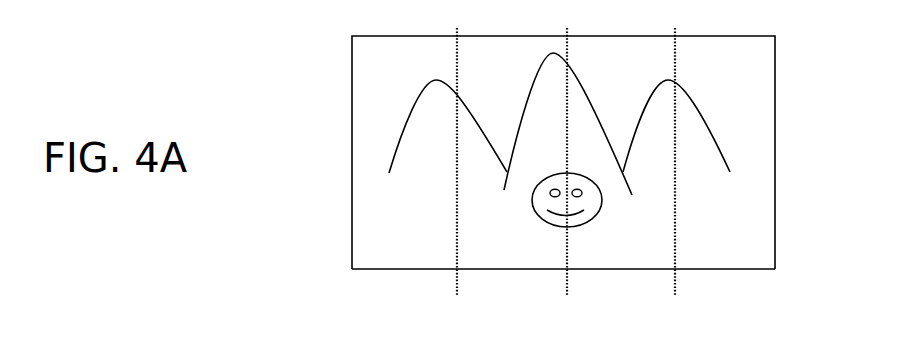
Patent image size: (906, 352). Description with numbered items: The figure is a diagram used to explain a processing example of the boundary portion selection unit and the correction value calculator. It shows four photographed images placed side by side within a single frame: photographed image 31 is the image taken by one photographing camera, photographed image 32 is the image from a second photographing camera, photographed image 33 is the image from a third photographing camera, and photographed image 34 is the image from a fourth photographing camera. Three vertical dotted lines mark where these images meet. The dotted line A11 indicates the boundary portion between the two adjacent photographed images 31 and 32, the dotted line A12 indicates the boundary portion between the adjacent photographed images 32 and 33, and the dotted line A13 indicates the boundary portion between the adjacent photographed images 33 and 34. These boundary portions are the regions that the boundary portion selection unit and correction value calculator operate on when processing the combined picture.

The photographed image 31 is at (407, 259).
The photographed image 32 is at (512, 259).
The photographed image 33 is at (629, 259).
The photographed image 34 is at (724, 259).
The dotted line A11 is at (457, 30).
The dotted line A12 is at (567, 30).
The dotted line A13 is at (675, 30).